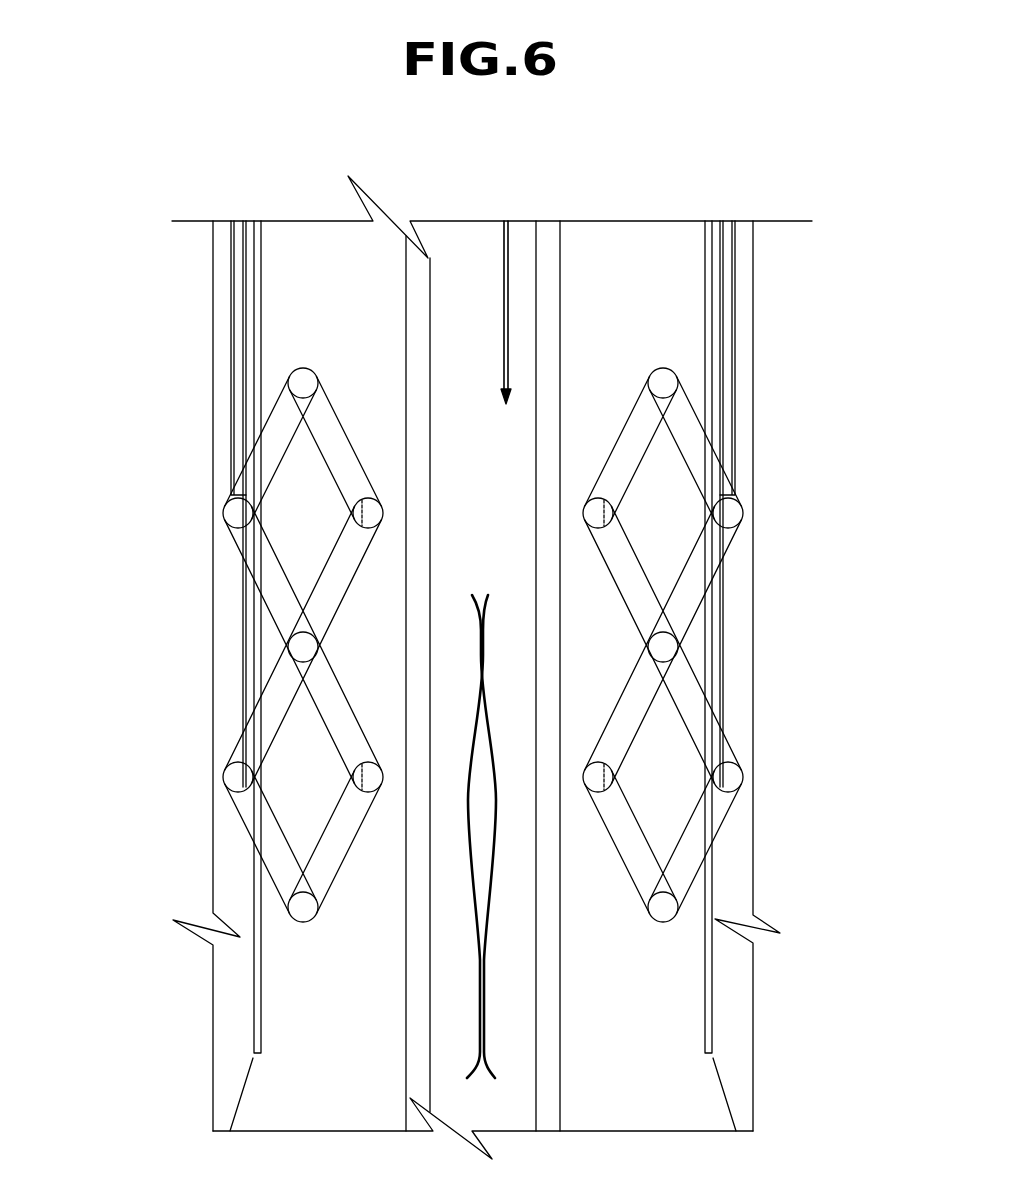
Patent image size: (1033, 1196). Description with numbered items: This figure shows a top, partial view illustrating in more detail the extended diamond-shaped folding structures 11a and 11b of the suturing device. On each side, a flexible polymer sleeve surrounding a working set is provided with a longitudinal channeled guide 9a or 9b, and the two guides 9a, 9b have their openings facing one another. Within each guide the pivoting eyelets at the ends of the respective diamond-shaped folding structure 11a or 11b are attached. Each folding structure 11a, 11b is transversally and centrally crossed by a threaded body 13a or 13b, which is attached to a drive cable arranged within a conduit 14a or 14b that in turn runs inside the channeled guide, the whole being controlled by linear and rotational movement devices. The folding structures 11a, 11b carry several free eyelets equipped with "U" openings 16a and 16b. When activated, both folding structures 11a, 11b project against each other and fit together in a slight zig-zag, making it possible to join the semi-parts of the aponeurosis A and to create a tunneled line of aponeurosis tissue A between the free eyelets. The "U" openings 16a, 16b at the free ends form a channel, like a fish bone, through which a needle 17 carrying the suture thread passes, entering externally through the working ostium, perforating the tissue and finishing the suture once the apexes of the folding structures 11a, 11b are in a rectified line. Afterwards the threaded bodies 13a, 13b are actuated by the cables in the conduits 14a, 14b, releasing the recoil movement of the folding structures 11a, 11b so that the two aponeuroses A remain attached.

The longitudinal channeled guide 9a is at (233, 1022).
The longitudinal channeled guide 9b is at (732, 1012).
The diamond-shaped folding structure 11a is at (217, 645).
The diamond-shaped folding structure 11b is at (748, 645).
The threaded body 13a is at (240, 650).
The threaded body 13b is at (717, 635).
The conduit 14a is at (238, 412).
The conduit 14b is at (727, 393).
The "U" opening 16a is at (375, 512).
The "U" opening 16b is at (592, 512).
The needle 17 is at (507, 400).
The aponeurosis A is at (472, 908).